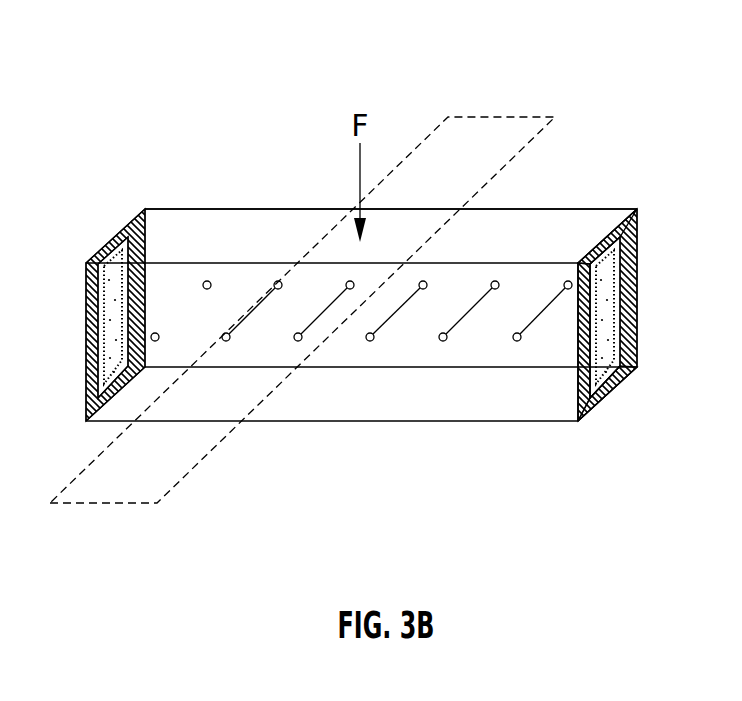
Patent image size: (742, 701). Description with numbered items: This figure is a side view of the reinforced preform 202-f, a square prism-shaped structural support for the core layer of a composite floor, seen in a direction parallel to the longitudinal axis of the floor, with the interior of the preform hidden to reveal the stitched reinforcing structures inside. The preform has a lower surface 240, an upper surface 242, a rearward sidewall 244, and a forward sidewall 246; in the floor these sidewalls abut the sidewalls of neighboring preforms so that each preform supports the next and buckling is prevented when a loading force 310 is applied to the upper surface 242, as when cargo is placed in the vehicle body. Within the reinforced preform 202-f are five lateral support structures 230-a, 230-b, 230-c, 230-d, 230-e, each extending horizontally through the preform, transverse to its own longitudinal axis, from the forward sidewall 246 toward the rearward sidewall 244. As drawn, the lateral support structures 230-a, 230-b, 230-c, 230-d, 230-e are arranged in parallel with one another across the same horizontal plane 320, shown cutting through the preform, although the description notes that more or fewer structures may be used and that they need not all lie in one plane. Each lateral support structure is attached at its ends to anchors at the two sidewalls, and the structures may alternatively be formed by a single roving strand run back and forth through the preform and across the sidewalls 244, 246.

The reinforced preform 202-f is at (258, 128).
The horizontal plane 320 is at (497, 117).
The loading force 310 is at (365, 213).
The lateral support structure 230-a is at (533, 313).
The lateral support structure 230-b is at (458, 315).
The lateral support structure 230-c is at (385, 315).
The lateral support structure 230-d is at (293, 316).
The lateral support structure 230-e is at (233, 313).
The upper surface 242 is at (580, 219).
The rearward sidewall 244 is at (650, 252).
The forward sidewall 246 is at (566, 347).
The lower surface 240 is at (618, 436).